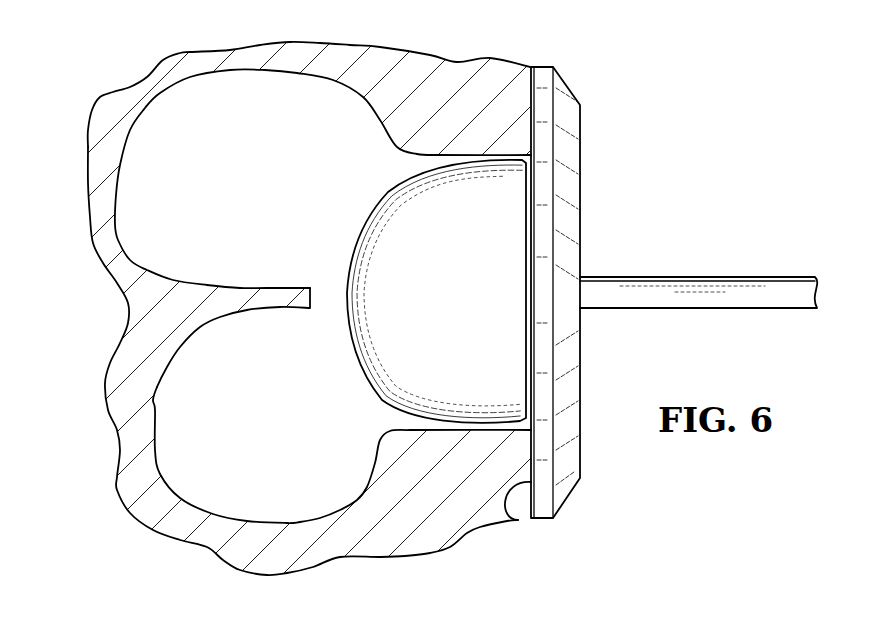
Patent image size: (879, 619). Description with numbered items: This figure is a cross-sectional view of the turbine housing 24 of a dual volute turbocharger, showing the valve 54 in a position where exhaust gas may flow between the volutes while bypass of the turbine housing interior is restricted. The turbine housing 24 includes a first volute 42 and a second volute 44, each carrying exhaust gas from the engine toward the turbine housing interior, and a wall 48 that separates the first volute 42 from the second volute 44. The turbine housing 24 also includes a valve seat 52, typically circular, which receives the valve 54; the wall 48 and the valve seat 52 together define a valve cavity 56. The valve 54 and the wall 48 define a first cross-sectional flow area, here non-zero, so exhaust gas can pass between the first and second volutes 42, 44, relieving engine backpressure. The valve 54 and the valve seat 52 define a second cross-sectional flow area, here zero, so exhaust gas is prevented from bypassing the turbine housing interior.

The turbine housing 24 is at (452, 84).
The first volute 42 is at (158, 191).
The second volute 44 is at (188, 416).
The wall 48 is at (216, 310).
The valve seat 52 is at (507, 497).
The valve 54 is at (638, 292).
The valve cavity 56 is at (357, 427).